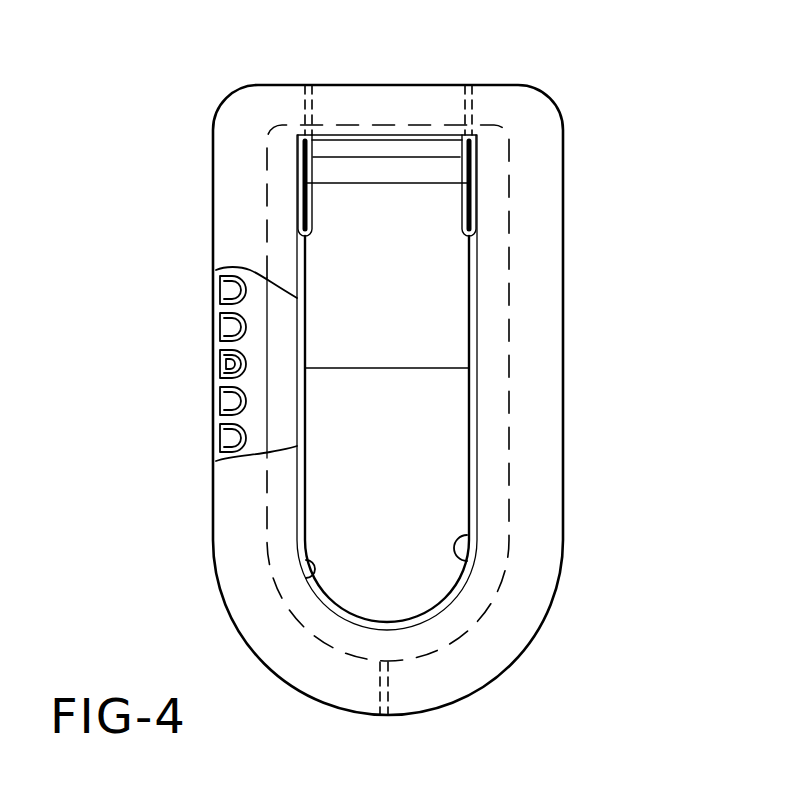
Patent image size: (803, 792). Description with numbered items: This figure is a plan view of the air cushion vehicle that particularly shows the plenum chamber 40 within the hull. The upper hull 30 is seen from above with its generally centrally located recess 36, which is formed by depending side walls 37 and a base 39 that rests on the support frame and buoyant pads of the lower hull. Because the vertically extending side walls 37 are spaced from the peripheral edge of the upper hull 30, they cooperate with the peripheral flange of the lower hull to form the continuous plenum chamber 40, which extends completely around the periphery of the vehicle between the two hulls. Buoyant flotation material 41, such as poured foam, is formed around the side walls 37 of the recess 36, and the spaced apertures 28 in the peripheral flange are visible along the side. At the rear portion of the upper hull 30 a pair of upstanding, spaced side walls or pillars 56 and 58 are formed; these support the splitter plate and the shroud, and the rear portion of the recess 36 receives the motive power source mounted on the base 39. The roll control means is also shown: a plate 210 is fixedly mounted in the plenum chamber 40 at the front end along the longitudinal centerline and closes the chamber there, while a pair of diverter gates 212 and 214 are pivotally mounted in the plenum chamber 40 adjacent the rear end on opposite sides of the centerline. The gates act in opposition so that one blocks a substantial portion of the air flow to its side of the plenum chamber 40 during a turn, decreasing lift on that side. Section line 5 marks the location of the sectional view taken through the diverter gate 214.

The upper hull 30 is at (533, 603).
The diverter gate 212 is at (308, 106).
The diverter gate 214 is at (465, 107).
The plate 210 is at (393, 688).
The section line 5- 5 is at (445, 68).
The recess 36 is at (450, 481).
The base 39 is at (453, 402).
The side wall 56 is at (298, 187).
The side wall 58 is at (477, 210).
The buoyant flotation material 41 is at (280, 332).
The plenum chamber 40 is at (264, 429).
The apertures 28 is at (222, 370).
The side walls 37 is at (470, 563).